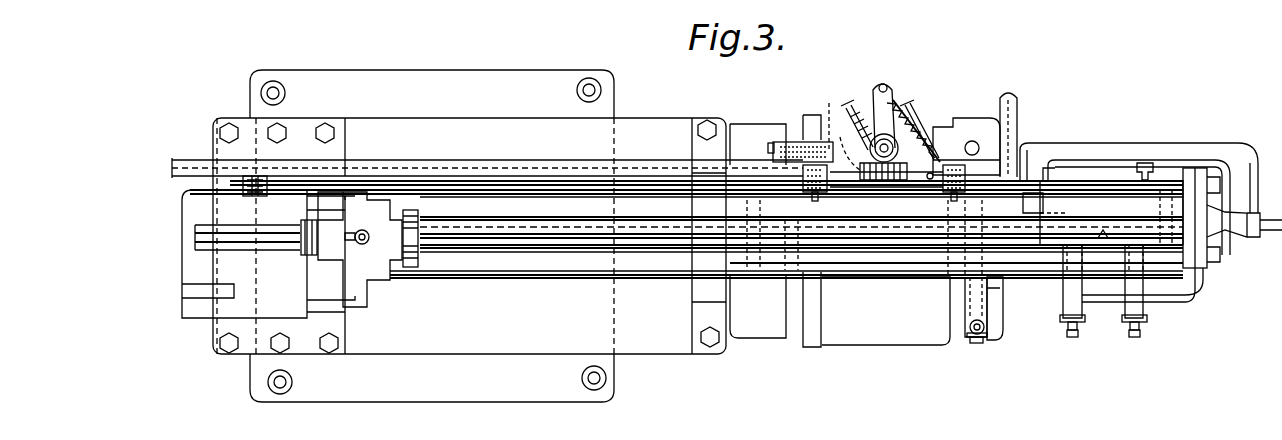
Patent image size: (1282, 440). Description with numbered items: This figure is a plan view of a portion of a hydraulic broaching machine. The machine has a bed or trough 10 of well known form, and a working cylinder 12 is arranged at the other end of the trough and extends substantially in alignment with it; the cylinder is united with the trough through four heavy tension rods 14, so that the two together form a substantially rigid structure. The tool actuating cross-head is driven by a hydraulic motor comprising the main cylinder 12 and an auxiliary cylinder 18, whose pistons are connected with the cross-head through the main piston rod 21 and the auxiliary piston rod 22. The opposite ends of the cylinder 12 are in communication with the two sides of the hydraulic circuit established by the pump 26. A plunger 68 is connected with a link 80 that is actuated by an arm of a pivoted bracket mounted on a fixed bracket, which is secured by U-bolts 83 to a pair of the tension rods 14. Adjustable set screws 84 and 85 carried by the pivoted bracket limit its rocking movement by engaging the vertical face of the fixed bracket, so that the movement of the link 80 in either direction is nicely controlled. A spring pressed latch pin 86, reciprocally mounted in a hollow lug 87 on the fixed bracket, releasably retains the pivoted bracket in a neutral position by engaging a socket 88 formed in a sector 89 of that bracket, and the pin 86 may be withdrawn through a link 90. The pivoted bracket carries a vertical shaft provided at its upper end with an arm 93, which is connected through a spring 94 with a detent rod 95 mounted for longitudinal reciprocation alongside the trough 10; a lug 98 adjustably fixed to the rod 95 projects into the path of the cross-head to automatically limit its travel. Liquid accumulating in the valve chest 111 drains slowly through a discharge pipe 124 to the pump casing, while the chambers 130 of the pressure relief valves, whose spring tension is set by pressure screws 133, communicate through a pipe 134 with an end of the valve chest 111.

The bed or trough 10 is at (190, 262).
The working cylinder 12 is at (657, 263).
The tension rods 14 is at (1040, 181).
The auxiliary cylinder 18 is at (573, 252).
The main piston rod 21 is at (195, 230).
The auxiliary piston rod 22 is at (242, 245).
The pump 26 is at (902, 341).
The plunger 68 is at (975, 345).
The link 80 is at (958, 140).
The U-bolts 83 is at (820, 197).
The adjustable set screw 84 is at (847, 104).
The adjustable set screw 85 is at (920, 108).
The spring pressed latch pin 86 is at (826, 116).
The hollow lug 87 is at (790, 140).
The socket 88 is at (893, 84).
The sector 89 is at (865, 152).
The link 90 is at (176, 161).
The arm 93 is at (902, 104).
The spring 94 is at (918, 128).
The detent rod 95 is at (575, 178).
The lug 98 is at (268, 176).
The valve chest 111 is at (1118, 200).
The discharge pipe 124 is at (1105, 162).
The chamber 130 is at (1070, 291).
The pressure screw 133 is at (1073, 338).
The pipe 134 is at (1180, 301).